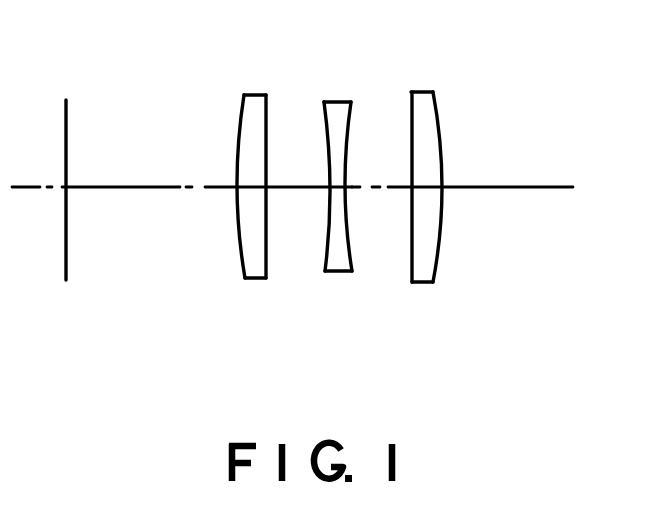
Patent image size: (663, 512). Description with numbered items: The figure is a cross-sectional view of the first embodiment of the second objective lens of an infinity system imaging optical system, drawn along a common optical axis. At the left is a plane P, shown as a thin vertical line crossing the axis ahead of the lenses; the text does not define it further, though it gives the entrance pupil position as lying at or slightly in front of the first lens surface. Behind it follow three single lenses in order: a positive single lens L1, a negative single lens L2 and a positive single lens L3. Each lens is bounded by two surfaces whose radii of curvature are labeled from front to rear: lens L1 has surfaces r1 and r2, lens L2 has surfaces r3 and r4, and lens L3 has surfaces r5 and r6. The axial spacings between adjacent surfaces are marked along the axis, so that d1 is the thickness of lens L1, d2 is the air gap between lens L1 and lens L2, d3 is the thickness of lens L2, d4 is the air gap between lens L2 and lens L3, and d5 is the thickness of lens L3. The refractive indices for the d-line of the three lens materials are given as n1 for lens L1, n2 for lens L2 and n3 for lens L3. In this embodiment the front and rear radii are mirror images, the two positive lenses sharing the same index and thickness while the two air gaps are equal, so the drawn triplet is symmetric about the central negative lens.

The stop (aperture plane) P is at (66, 100).
The positive single lens L1 is at (255, 95).
The negative single lens L2 is at (335, 102).
The positive single lens L3 is at (420, 92).
The spacing between lens surfaces d1 is at (250, 183).
The spacing between lens surfaces d2 is at (298, 175).
The spacing between lens surfaces d3 is at (345, 170).
The spacing between lens surfaces d4 is at (382, 175).
The spacing between lens surfaces d5 is at (427, 183).
The refractive index n1 is at (243, 229).
The refractive index n2 is at (338, 228).
The refractive index n3 is at (427, 225).
The radius of curvature of lens surface r1 is at (243, 268).
The radius of curvature of lens surface r2 is at (268, 270).
The radius of curvature of lens surface r3 is at (328, 265).
The radius of curvature of lens surface r4 is at (352, 262).
The radius of curvature of lens surface r5 is at (410, 265).
The radius of curvature of lens surface r6 is at (435, 270).